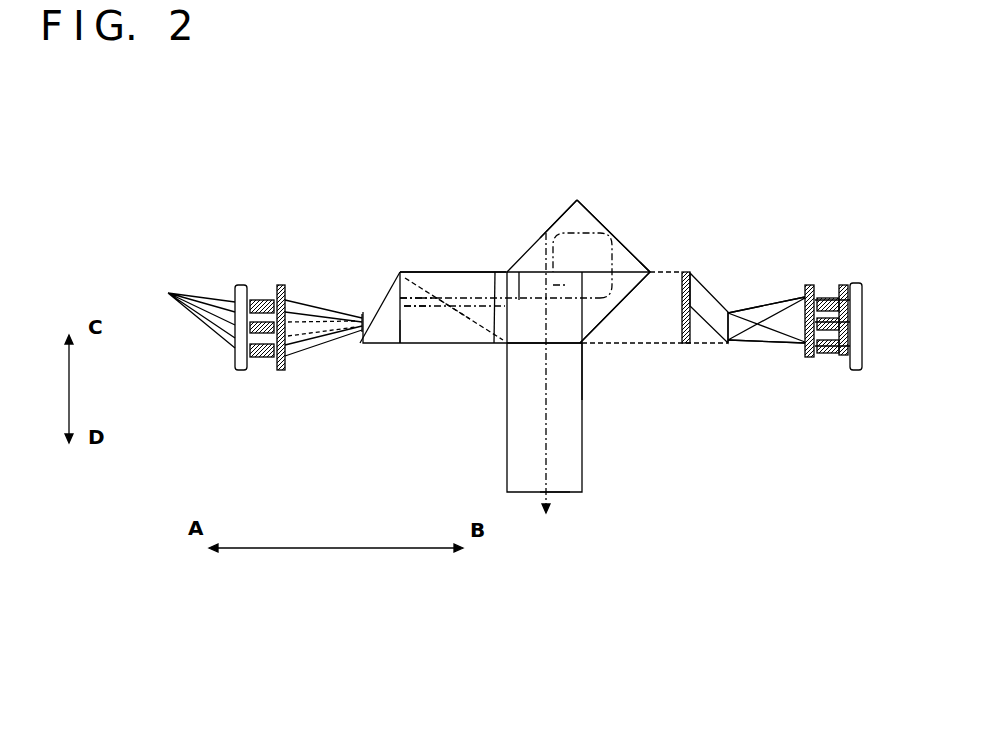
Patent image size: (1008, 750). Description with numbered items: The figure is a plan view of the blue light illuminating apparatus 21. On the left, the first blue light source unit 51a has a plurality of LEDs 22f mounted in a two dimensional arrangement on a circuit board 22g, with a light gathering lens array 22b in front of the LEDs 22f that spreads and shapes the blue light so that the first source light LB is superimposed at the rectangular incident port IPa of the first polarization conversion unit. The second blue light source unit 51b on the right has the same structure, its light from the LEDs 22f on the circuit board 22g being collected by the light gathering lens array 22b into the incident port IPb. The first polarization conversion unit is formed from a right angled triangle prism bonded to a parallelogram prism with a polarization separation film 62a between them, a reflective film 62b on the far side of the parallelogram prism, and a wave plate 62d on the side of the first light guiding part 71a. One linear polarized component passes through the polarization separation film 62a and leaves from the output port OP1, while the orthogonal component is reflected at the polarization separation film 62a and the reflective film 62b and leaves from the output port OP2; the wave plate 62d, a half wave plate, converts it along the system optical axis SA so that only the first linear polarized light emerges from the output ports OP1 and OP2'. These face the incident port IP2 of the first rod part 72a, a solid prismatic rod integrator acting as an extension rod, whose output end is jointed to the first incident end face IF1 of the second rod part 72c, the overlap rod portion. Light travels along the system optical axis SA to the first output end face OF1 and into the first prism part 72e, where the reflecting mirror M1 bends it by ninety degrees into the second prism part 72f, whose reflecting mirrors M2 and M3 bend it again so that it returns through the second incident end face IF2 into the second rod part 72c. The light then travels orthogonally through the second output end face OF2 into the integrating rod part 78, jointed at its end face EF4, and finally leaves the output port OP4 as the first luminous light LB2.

The blue light illuminating apparatus 21 is at (883, 89).
The first blue light source unit 51a is at (235, 248).
The second blue light source unit 51b is at (828, 272).
The circuit board 22g is at (238, 287).
The light gathering lens array 22b is at (277, 287).
The LED 22f is at (842, 405).
The first source light LB is at (292, 290).
The first luminous light LB2 is at (548, 447).
The polarization separation film 62a is at (383, 343).
The reflective film 62b is at (388, 292).
The wave plate 62d is at (400, 268).
The incident port IPa is at (358, 335).
The incident port IPb is at (730, 308).
The incident port IP2 is at (402, 343).
The first incident end face IF1 is at (495, 272).
The second incident end face IF2 is at (519, 272).
The output port OP1 is at (413, 343).
The output port OP2 is at (388, 225).
The output port OP2' is at (428, 238).
The output port OP4 is at (568, 493).
The first output end face OF1 is at (646, 265).
The second output end face OF2 is at (520, 345).
The system optical axis SA is at (449, 343).
The first rod part 72a is at (465, 272).
The second rod part 72c is at (563, 313).
The first prism part 72e is at (655, 270).
The second prism part 72f is at (584, 218).
The first light guiding part 71a is at (569, 199).
The reflecting mirror M1 is at (595, 332).
The reflecting mirror M2 is at (615, 240).
The reflecting mirror M3 is at (562, 226).
The end face EF4 is at (583, 380).
The integrating rod part 78 is at (582, 477).